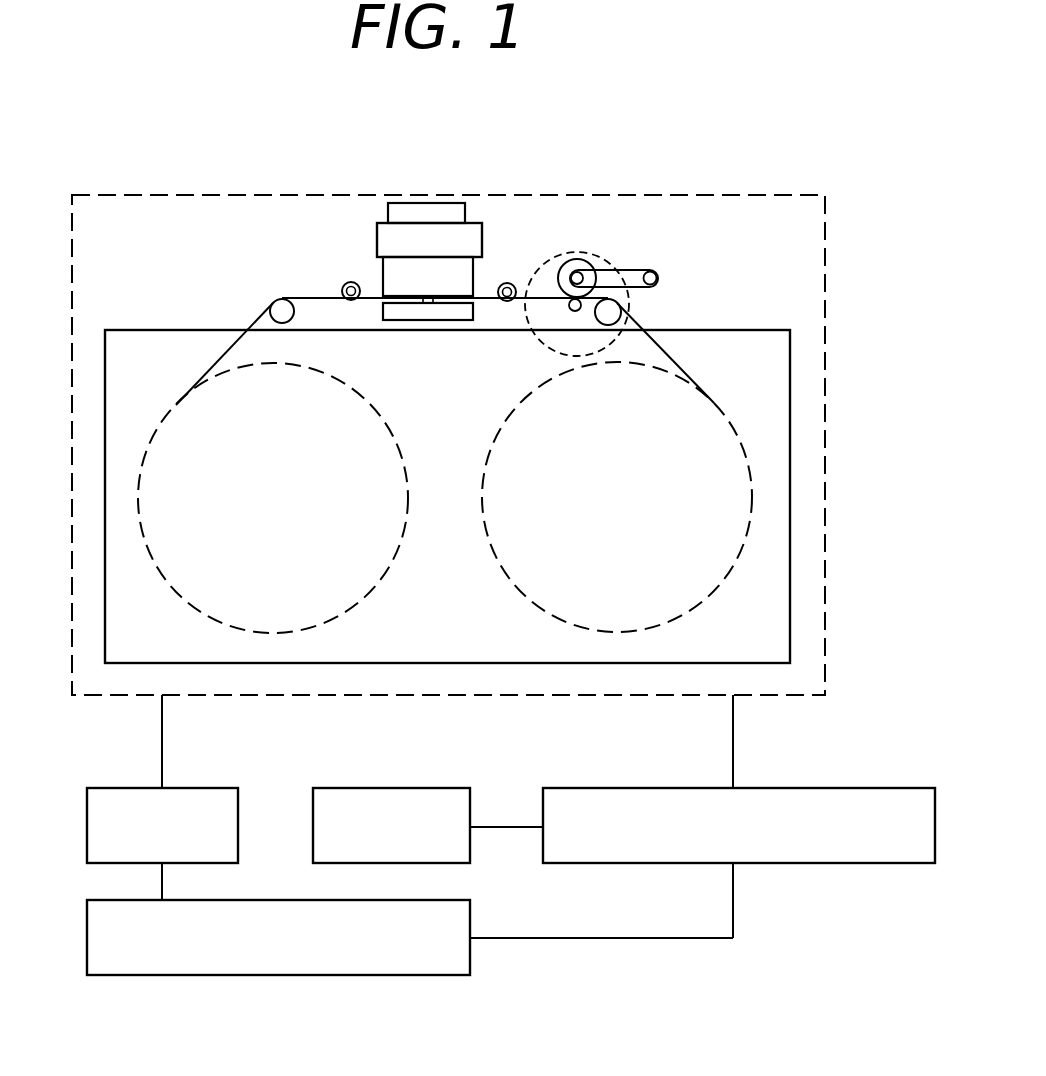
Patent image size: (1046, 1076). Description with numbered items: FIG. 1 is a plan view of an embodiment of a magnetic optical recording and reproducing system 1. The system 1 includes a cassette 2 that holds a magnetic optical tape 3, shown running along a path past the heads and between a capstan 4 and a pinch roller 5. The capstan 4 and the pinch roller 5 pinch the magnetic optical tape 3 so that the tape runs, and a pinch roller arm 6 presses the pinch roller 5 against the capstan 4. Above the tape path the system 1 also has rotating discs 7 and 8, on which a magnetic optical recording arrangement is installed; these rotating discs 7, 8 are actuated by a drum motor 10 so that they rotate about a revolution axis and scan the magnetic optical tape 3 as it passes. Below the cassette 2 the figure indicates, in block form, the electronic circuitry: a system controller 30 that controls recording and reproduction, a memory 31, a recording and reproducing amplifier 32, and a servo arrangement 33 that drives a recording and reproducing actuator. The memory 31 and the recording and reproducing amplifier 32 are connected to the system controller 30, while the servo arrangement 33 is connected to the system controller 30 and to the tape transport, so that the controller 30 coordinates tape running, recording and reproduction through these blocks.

The magnetic optical recording and reproducing system 1 is at (812, 650).
The cassette 2 is at (773, 568).
The magnetic optical tape 3 is at (250, 320).
The capstan 4 is at (568, 305).
The pinch roller 5 is at (577, 262).
The pinch roller arm 6 is at (640, 270).
The rotating disc 7 is at (383, 312).
The rotating disc 8 is at (467, 279).
The drum motor 10 is at (427, 210).
The system controller 30 is at (428, 976).
The memory 31 is at (394, 788).
The recording and reproducing amplifier 32 is at (812, 788).
The servo arrangement 33 is at (188, 788).